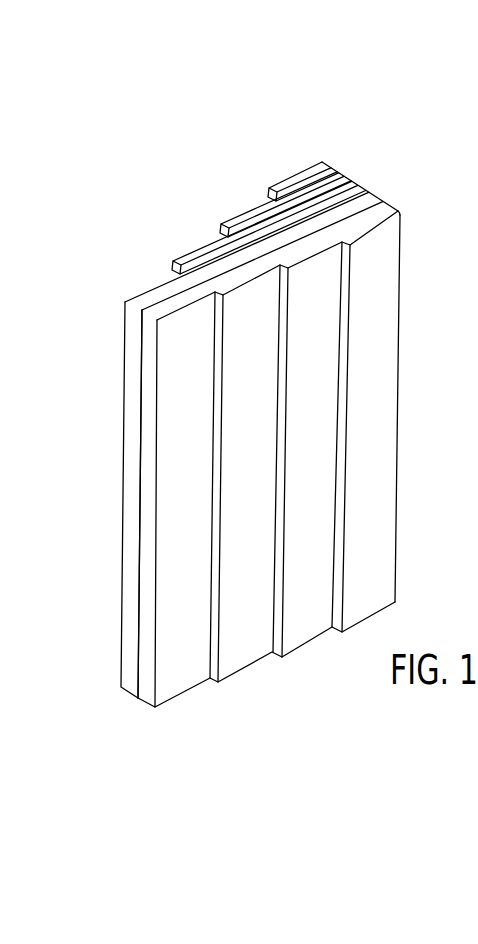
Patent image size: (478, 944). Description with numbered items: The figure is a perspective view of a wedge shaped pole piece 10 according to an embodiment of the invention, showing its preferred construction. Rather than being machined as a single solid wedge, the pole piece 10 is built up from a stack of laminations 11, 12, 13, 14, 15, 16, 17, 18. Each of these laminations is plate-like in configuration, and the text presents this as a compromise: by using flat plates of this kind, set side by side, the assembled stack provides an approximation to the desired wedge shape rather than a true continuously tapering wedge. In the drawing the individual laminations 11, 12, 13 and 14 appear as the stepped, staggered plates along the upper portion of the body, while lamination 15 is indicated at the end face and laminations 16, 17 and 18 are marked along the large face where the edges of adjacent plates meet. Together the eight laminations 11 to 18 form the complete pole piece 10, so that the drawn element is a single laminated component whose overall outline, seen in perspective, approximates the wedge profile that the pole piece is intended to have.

The pole piece 10 is at (361, 159).
The lamination 11 is at (297, 184).
The lamination 12 is at (242, 222).
The lamination 13 is at (190, 254).
The lamination 14 is at (146, 292).
The lamination 15 is at (151, 314).
The lamination 16 is at (263, 387).
The lamination 17 is at (323, 387).
The lamination 18 is at (381, 387).